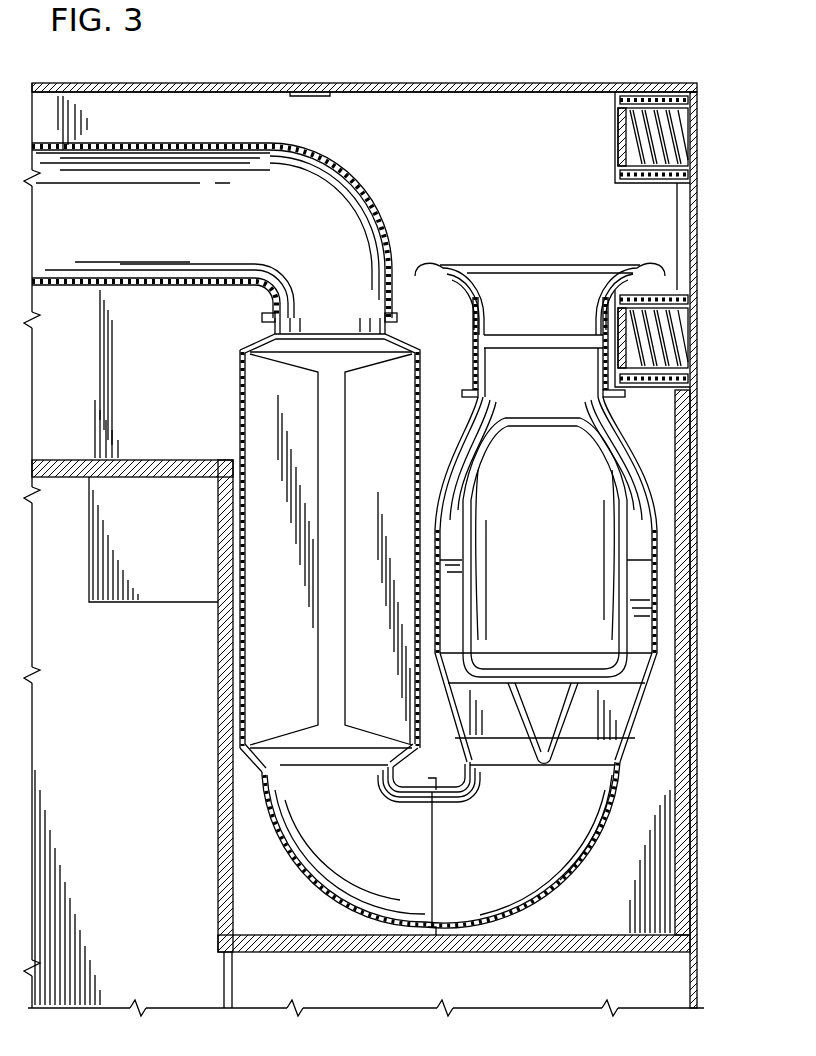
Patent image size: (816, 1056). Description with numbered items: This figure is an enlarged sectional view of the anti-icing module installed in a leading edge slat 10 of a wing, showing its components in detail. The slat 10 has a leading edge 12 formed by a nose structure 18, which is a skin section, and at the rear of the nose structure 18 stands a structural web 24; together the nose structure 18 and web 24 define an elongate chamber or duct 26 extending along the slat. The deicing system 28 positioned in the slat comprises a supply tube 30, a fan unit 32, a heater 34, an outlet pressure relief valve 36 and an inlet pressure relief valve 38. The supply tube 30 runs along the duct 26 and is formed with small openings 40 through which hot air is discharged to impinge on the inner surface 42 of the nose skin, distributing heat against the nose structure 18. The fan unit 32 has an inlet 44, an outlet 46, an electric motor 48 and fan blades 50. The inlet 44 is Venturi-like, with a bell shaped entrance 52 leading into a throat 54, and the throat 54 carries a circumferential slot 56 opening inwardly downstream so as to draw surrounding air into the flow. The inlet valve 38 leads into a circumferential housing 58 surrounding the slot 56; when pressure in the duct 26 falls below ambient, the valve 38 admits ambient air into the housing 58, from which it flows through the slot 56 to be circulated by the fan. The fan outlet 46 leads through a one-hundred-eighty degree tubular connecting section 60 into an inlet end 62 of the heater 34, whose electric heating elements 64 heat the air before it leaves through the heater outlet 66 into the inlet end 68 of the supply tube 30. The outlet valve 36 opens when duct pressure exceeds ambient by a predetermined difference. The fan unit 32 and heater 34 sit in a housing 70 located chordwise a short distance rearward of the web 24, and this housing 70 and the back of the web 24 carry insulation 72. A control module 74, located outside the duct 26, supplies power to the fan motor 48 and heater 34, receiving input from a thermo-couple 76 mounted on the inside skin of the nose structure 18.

The leading edge slat 10 is at (546, 68).
The leading edge 12 is at (578, 84).
The nose structure 18 is at (563, 87).
The web 24 is at (90, 460).
The chamber or duct 26 is at (90, 100).
The deicing system 28 is at (510, 245).
The supply tube 30 is at (183, 285).
The fan unit 32 is at (663, 562).
The heater 34 is at (233, 655).
The outlet pressure relief valve 36 is at (690, 128).
The inlet pressure relief valve 38 is at (665, 335).
The small openings 40 is at (285, 143).
The inner surface 42 is at (205, 98).
The inlet 44 is at (537, 400).
The outlet 46 is at (595, 790).
The electric motor 48 is at (526, 537).
The fan blades 50 is at (630, 707).
The bell shaped entrance 52 is at (500, 270).
The throat 54 is at (545, 345).
The circumferential slot 56 is at (477, 315).
The circumferential housing 58 is at (470, 362).
The tubular connecting section 60 is at (540, 895).
The inlet end of heater 62 is at (363, 755).
The electric heating elements 64 is at (367, 428).
The heater outlet 66 is at (320, 330).
The inlet end of supply tube 68 is at (366, 248).
The housing 70 is at (695, 752).
The insulation 72 is at (682, 790).
The control module 74 is at (105, 550).
The thermo-couple 76 is at (310, 95).